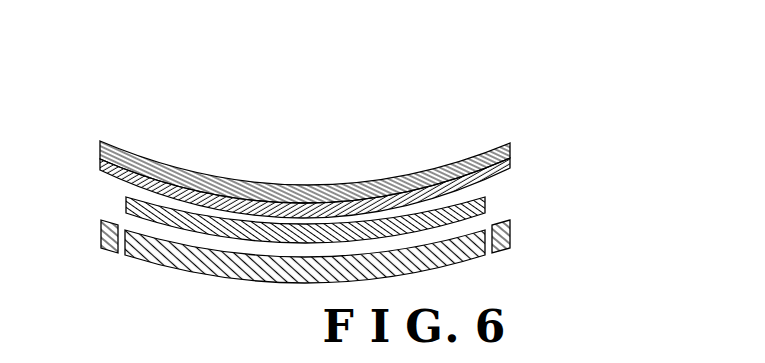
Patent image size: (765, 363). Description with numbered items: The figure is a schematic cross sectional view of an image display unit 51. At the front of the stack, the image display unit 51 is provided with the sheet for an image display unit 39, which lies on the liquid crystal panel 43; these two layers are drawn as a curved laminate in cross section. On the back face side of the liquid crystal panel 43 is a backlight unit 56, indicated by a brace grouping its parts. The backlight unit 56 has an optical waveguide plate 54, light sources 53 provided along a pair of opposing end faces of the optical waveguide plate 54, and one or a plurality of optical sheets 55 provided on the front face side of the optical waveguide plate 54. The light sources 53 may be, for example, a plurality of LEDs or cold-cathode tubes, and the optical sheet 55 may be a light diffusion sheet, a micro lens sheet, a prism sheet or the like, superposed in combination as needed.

The image display unit 51 is at (604, 98).
The sheet for an image display unit 39 is at (511, 152).
The liquid crystal panel 43 is at (511, 170).
The optical sheet 55 is at (490, 203).
The light source 53 is at (100, 235).
The optical waveguide plate 54 is at (457, 272).
The backlight unit 56 is at (568, 200).